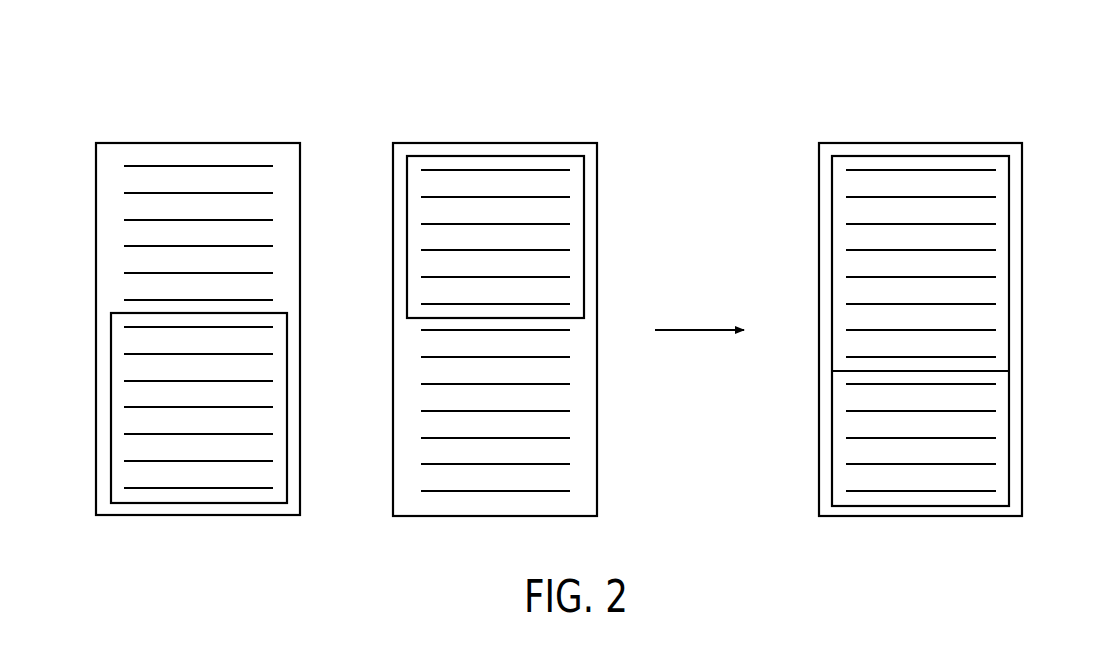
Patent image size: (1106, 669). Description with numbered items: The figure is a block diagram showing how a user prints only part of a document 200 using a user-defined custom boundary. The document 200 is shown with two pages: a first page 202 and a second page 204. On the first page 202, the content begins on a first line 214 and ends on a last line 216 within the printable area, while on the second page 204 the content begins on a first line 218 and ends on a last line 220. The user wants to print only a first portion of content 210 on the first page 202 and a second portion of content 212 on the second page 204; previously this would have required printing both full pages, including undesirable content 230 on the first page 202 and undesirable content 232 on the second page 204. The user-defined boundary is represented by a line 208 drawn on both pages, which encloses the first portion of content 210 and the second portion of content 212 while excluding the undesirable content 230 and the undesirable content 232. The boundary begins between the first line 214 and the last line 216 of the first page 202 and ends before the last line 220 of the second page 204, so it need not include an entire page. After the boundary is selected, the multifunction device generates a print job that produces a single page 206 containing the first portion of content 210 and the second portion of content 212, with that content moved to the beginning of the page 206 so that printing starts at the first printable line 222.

The document 200 is at (318, 68).
The first page 202 is at (188, 142).
The second page 204 is at (452, 142).
The page 206 is at (926, 142).
The line 208 is at (287, 337).
The first portion of content 210 is at (165, 476).
The second portion of content 212 is at (524, 178).
The first line 214 is at (135, 165).
The last line 216 is at (265, 489).
The first line 218 is at (560, 170).
The last line 220 is at (553, 492).
The first printable line 222 is at (985, 172).
The undesirable content 230 is at (262, 172).
The undesirable content 232 is at (553, 385).